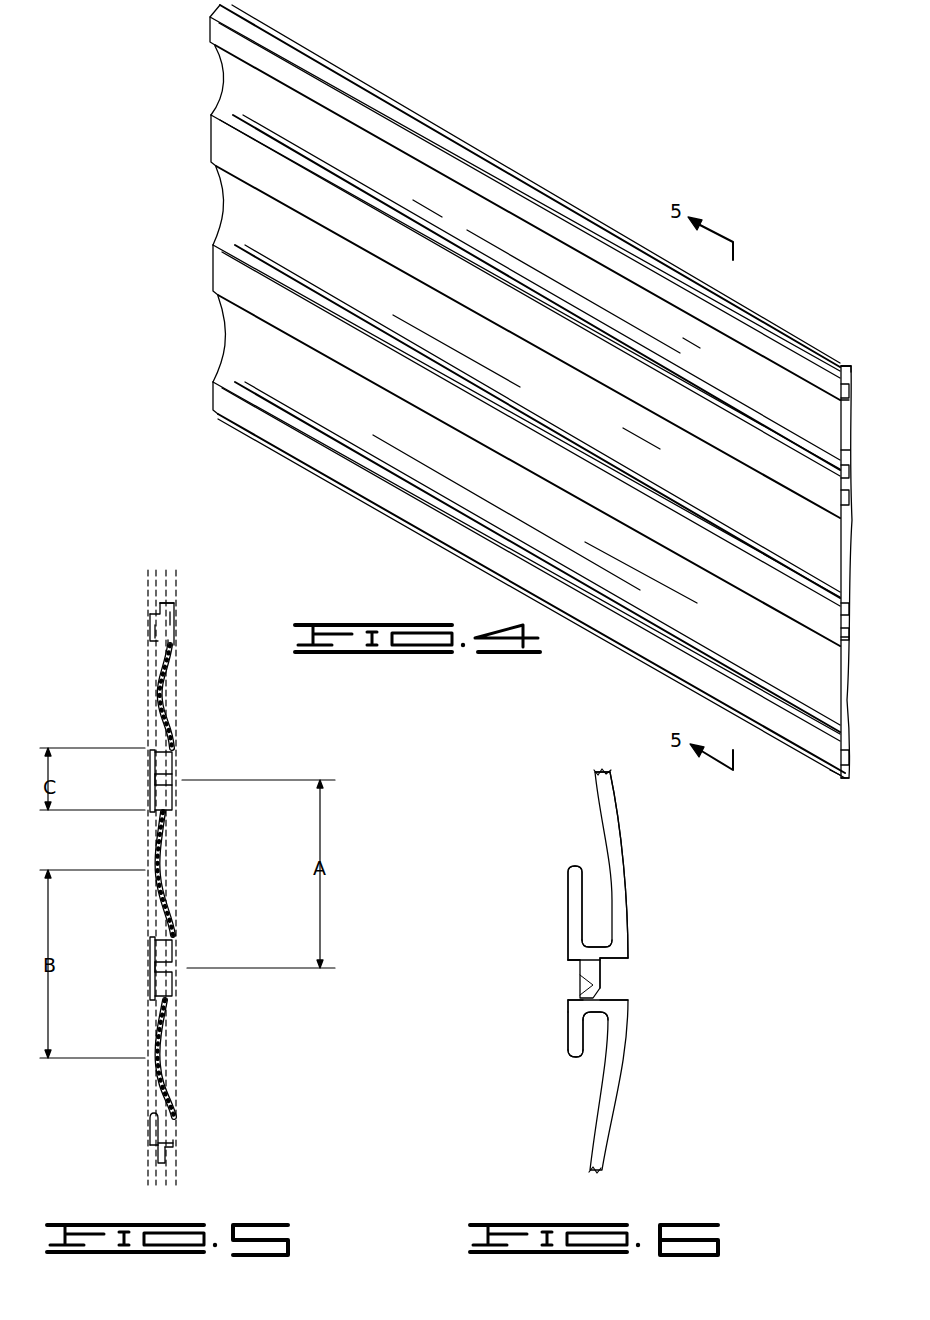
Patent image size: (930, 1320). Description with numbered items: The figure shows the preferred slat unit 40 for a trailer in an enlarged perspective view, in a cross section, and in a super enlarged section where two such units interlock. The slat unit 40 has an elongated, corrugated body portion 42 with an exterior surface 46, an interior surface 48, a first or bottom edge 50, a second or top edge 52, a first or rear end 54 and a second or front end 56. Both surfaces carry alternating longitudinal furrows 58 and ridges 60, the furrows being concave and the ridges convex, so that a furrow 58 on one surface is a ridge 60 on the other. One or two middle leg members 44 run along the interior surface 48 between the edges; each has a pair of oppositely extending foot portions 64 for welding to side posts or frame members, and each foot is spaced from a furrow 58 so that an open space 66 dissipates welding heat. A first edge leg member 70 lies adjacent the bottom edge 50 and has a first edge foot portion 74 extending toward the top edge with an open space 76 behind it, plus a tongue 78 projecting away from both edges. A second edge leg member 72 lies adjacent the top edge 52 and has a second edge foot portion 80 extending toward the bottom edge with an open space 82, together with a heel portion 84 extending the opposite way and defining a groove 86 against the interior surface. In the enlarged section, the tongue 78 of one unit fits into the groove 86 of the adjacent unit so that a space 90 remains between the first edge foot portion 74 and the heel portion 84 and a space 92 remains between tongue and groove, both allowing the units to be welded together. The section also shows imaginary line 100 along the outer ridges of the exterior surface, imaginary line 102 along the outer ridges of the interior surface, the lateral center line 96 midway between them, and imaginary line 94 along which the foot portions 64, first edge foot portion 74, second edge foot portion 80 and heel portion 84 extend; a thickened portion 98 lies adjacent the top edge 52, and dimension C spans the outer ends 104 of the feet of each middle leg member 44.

In FIG. 4, the slat unit 40 is at (465, 66).
In FIG. 5, the slat unit 40 is at (97, 517).
In FIG. 6, the slat unit 40 is at (630, 857).
In FIG. 4, the body portion 42 is at (284, 236).
In FIG. 4, the middle leg member 44 is at (749, 448).
In FIG. 5, the middle leg member 44 is at (155, 780).
In FIG. 5, the exterior surface 46 is at (180, 790).
In FIG. 6, the exterior surface 46 is at (620, 814).
In FIG. 4, the interior surface 48 is at (292, 379).
In FIG. 5, the interior surface 48 is at (155, 855).
In FIG. 6, the interior surface 48 is at (598, 800).
In FIG. 4, the first or bottom edge 50 is at (855, 770).
In FIG. 5, the first or bottom edge 50 is at (172, 1140).
In FIG. 6, the first or bottom edge 50 is at (630, 958).
In FIG. 4, the second or top edge 52 is at (852, 372).
In FIG. 5, the second or top edge 52 is at (176, 607).
In FIG. 6, the second or top edge 52 is at (633, 960).
In FIG. 4, the first or rear end 54 is at (850, 450).
In FIG. 4, the second or front end 56 is at (215, 73).
In FIG. 4, the furrow 58 is at (850, 637).
In FIG. 5, the furrow 58 is at (168, 690).
In FIG. 4, the ridge 60 is at (659, 326).
In FIG. 5, the ridge 60 is at (155, 685).
In FIG. 4, the foot portion 64 is at (850, 472).
In FIG. 5, the foot portion 64 is at (170, 770).
In FIG. 4, the open space 66 is at (850, 500).
In FIG. 5, the open space 66 is at (152, 740).
In FIG. 4, the first edge leg member 70 is at (754, 711).
In FIG. 5, the first edge leg member 70 is at (148, 1145).
In FIG. 6, the first edge leg member 70 is at (585, 950).
In FIG. 4, the second edge leg member 72 is at (535, 215).
In FIG. 5, the second edge leg member 72 is at (155, 632).
In FIG. 6, the second edge leg member 72 is at (585, 1012).
In FIG. 4, the first edge foot portion 74 is at (640, 650).
In FIG. 5, the first edge foot portion 74 is at (150, 1120).
In FIG. 6, the first edge foot portion 74 is at (572, 885).
In FIG. 4, the open space 76 is at (850, 753).
In FIG. 5, the open space 76 is at (168, 1122).
In FIG. 6, the open space 76 is at (598, 925).
In FIG. 4, the tongue 78 is at (820, 768).
In FIG. 5, the tongue 78 is at (165, 1165).
In FIG. 6, the tongue 78 is at (590, 978).
In FIG. 4, the second edge foot portion 80 is at (845, 370).
In FIG. 5, the second edge foot portion 80 is at (152, 645).
In FIG. 6, the second edge foot portion 80 is at (577, 1057).
In FIG. 4, the open space 82 is at (850, 395).
In FIG. 5, the open space 82 is at (170, 645).
In FIG. 6, the open space 82 is at (605, 1030).
In FIG. 4, the heel portion 84 is at (795, 358).
In FIG. 5, the heel portion 84 is at (152, 617).
In FIG. 6, the heel portion 84 is at (575, 985).
In FIG. 4, the groove 86 is at (745, 300).
In FIG. 5, the groove 86 is at (165, 605).
In FIG. 6, the groove 86 is at (578, 1005).
In FIG. 6, the space 90 is at (572, 968).
In FIG. 6, the space 92 is at (602, 995).
In FIG. 5, the imaginary line 94 is at (147, 600).
In FIG. 5, the imaginary line 96 is at (168, 600).
In FIG. 5, the portion 98 is at (172, 622).
In FIG. 5, the imaginary line 100 is at (177, 600).
In FIG. 5, the imaginary line 102 is at (158, 600).
In FIG. 5, the outer end 104 is at (152, 755).